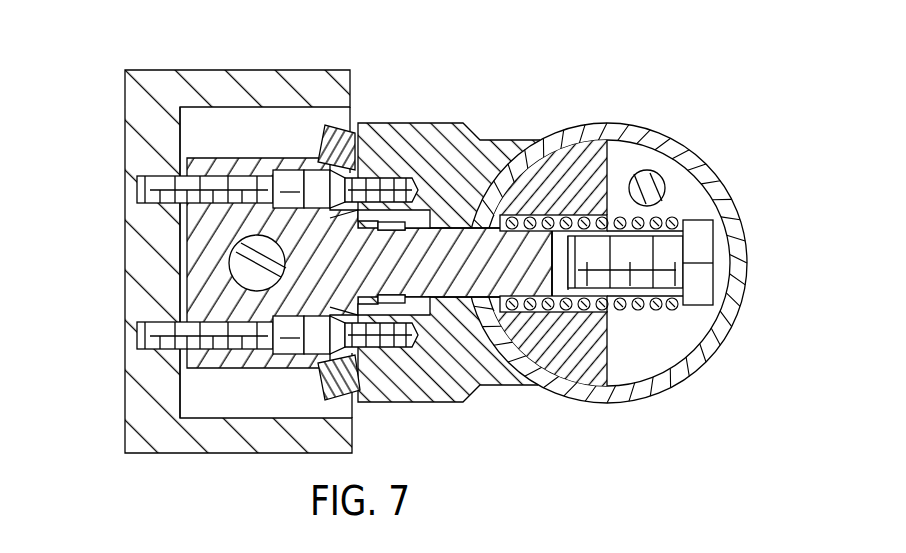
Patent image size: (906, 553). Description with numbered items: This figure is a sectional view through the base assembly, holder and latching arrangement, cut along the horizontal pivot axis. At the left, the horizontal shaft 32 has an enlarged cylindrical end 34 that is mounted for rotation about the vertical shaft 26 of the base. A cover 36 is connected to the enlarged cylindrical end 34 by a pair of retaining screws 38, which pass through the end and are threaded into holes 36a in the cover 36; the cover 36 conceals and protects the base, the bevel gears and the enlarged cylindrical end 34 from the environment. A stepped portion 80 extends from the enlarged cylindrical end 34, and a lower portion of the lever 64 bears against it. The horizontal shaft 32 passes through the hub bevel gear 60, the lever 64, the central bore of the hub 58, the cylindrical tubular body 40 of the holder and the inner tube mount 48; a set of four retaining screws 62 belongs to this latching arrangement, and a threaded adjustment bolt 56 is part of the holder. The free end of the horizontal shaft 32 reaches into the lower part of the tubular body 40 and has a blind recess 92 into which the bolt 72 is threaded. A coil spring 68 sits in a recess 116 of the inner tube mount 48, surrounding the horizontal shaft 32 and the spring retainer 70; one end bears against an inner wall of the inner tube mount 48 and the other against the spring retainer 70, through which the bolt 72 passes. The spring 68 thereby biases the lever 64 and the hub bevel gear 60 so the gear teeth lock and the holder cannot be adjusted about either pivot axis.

The vertical shaft 26 is at (240, 275).
The horizontal shaft 32 is at (488, 300).
The enlarged cylindrical end 34 is at (215, 237).
The cover 36 is at (262, 82).
The holes 36a is at (150, 182).
The retaining screws 38 is at (150, 196).
The cylindrical tubular body 40 is at (735, 165).
The inner tube mount 48 is at (588, 150).
The threaded adjustment bolt 56 is at (655, 180).
The hub 58 is at (480, 142).
The hub bevel gear 60 is at (352, 152).
The retaining screws 62 is at (330, 125).
The lever 64 is at (428, 212).
The coil spring 68 is at (665, 238).
The spring retainer 70 is at (682, 308).
The bolt 72 is at (706, 245).
The stepped portion 80 is at (420, 352).
The blind recess 92 is at (552, 305).
The recess 116 is at (562, 214).